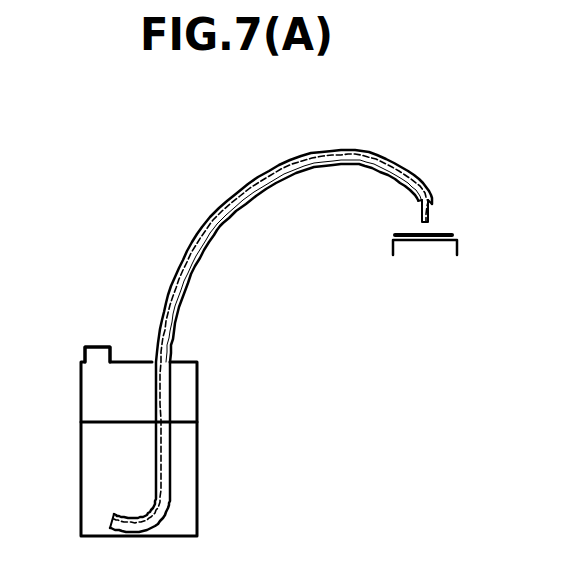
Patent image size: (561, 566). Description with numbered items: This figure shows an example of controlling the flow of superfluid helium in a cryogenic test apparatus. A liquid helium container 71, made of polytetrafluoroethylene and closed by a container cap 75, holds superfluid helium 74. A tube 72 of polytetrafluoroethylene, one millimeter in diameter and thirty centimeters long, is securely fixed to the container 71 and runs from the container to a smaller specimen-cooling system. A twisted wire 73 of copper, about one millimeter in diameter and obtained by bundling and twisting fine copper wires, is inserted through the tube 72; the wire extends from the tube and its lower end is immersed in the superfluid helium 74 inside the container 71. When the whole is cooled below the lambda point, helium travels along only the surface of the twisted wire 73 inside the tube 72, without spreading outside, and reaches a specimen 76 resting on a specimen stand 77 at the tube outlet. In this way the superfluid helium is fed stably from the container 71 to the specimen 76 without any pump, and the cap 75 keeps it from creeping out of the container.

The liquid helium container 71 is at (198, 382).
The tube 72 is at (223, 227).
The twisted wire 73 is at (165, 455).
The superfluid helium 74 is at (100, 453).
The container cap 75 is at (100, 346).
The specimen 76 is at (445, 232).
The specimen stand 77 is at (457, 247).